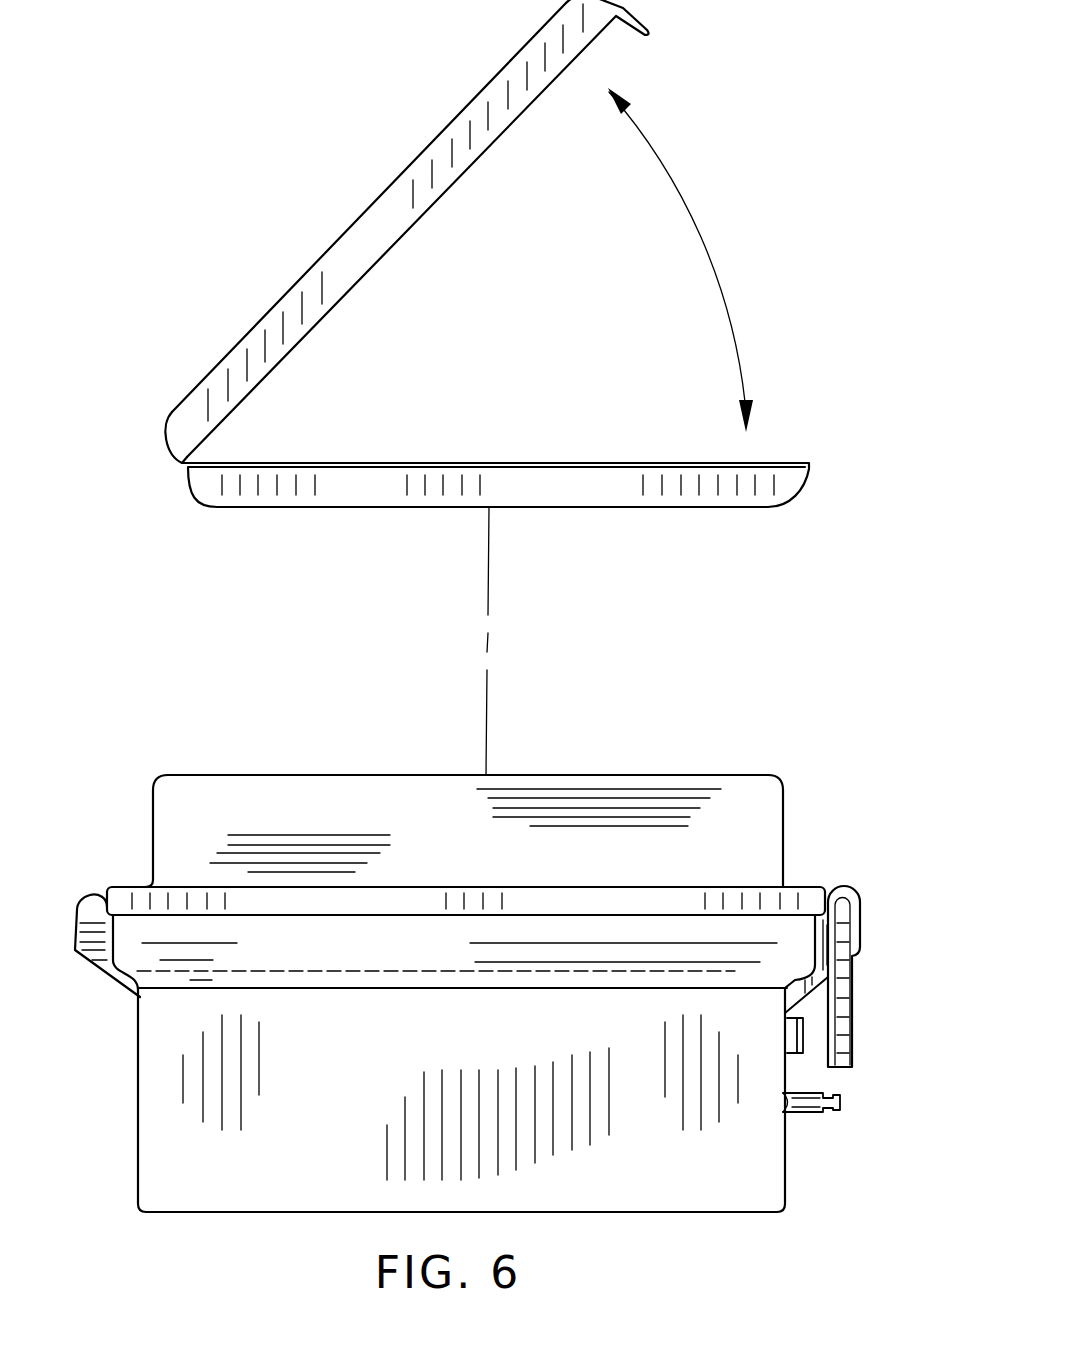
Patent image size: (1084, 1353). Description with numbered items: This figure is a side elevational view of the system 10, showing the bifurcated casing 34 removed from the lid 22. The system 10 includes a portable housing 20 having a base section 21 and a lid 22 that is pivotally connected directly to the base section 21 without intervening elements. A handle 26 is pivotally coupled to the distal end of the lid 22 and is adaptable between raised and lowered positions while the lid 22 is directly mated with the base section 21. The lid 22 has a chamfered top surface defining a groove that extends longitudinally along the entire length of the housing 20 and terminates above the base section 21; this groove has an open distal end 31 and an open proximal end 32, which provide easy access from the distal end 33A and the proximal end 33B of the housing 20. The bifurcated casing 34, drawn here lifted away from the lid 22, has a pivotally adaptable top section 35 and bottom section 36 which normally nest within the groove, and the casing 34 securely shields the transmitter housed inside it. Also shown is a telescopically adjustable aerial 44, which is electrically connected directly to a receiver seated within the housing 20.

The system 10 is at (892, 232).
The portable housing 20 is at (464, 1101).
The base section 21 is at (772, 1195).
The lid 22 is at (810, 894).
The handle 26 is at (845, 1025).
The open distal end 31 is at (477, 805).
The open proximal end 32 is at (806, 823).
The distal end of the housing 33A is at (783, 1158).
The proximal end of the housing 33B is at (137, 1077).
The bifurcated casing 34 is at (513, 522).
The top section 35 is at (350, 227).
The bottom section 36 is at (372, 508).
The telescopically adjustable aerial 44 is at (812, 1113).